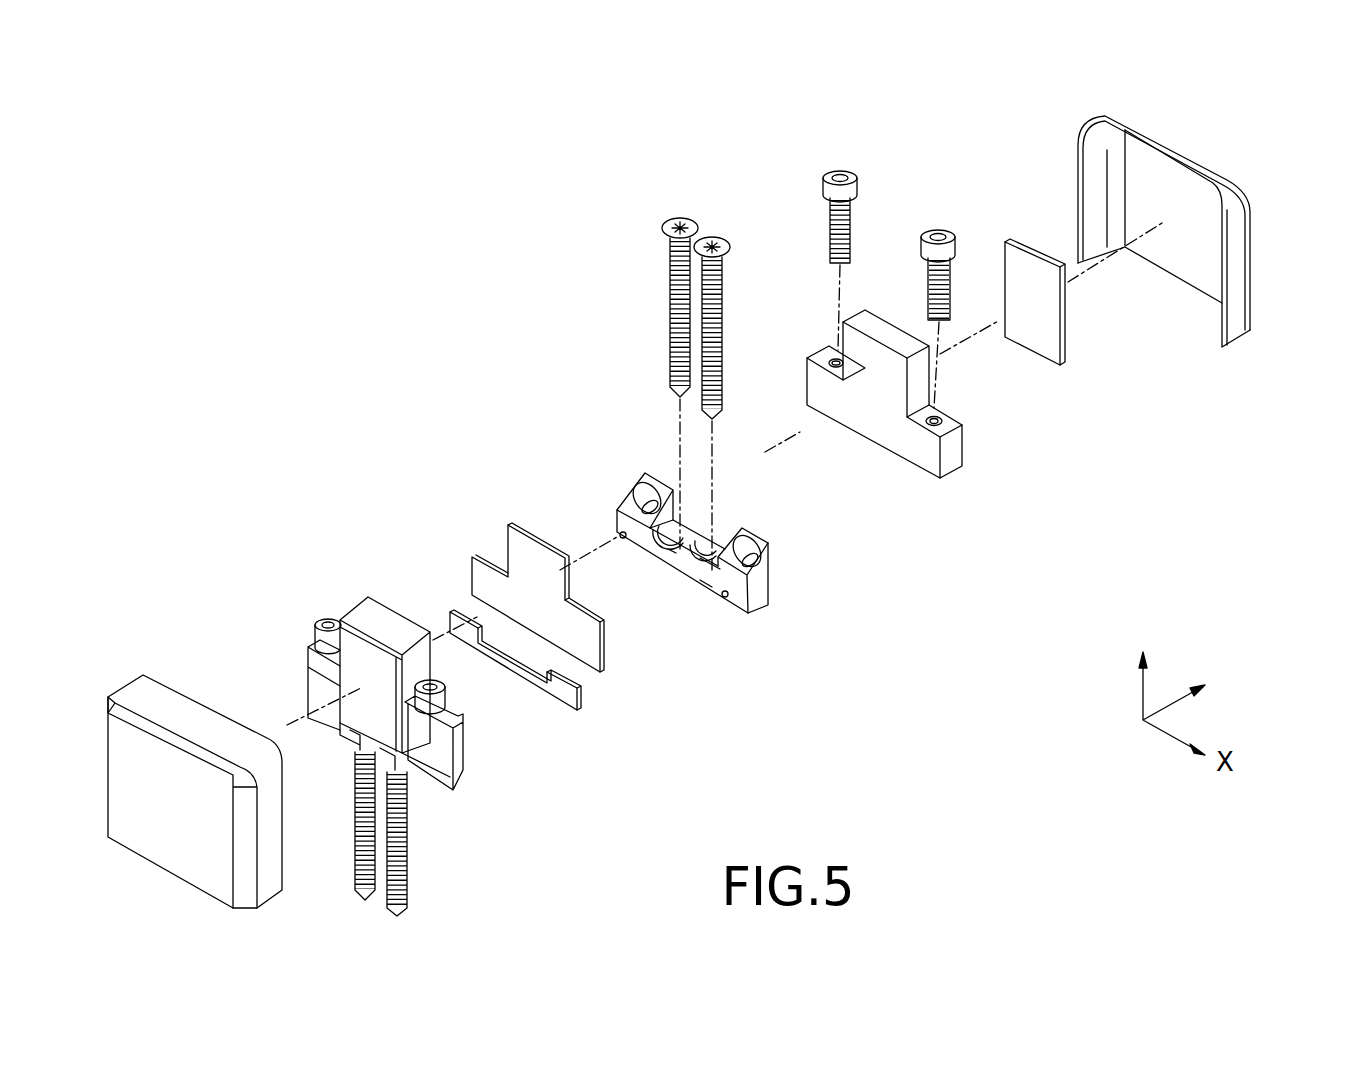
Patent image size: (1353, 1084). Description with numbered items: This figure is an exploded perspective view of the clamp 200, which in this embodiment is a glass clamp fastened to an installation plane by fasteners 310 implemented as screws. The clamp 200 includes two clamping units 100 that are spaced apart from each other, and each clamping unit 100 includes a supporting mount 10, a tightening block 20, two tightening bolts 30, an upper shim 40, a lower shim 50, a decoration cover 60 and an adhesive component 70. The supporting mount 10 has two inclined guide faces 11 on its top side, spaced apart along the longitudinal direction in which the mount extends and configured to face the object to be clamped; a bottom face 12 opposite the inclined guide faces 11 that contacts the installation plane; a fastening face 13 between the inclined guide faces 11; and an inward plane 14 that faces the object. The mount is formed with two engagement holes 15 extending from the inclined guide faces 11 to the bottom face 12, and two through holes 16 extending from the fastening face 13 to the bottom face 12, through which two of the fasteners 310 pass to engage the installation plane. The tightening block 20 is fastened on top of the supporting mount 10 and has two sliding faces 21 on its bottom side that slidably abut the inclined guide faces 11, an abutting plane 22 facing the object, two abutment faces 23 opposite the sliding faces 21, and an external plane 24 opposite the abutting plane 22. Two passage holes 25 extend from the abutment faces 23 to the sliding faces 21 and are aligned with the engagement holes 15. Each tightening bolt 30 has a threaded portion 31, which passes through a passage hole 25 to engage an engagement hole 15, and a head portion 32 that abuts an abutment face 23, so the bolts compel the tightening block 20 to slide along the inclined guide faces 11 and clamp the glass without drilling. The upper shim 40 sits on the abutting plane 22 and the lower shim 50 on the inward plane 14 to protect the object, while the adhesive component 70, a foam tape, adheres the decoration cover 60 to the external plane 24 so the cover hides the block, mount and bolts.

The supporting mount 10 is at (698, 565).
The inclined guide faces 11 is at (627, 488).
The bottom face 12 is at (718, 597).
The fastening face 13 is at (683, 560).
The inward plane 14 is at (702, 590).
The engagement holes 15 is at (650, 492).
The through holes 16 is at (663, 545).
The tightening block 20 is at (889, 392).
The sliding faces 21 is at (950, 465).
The abutting plane 22 is at (920, 460).
The abutment faces 23 is at (815, 350).
The external plane 24 is at (933, 375).
The passage holes 25 is at (833, 350).
The tightening bolts 30 is at (896, 250).
The threaded portion 31 is at (850, 233).
The head portion 32 is at (833, 170).
The upper shim 40 is at (507, 537).
The lower shim 50 is at (565, 690).
The decoration cover 60 is at (1213, 178).
The adhesive component 70 is at (1048, 330).
The clamping units 100 is at (272, 545).
The clamp 200 is at (541, 273).
The fasteners 310 is at (667, 222).